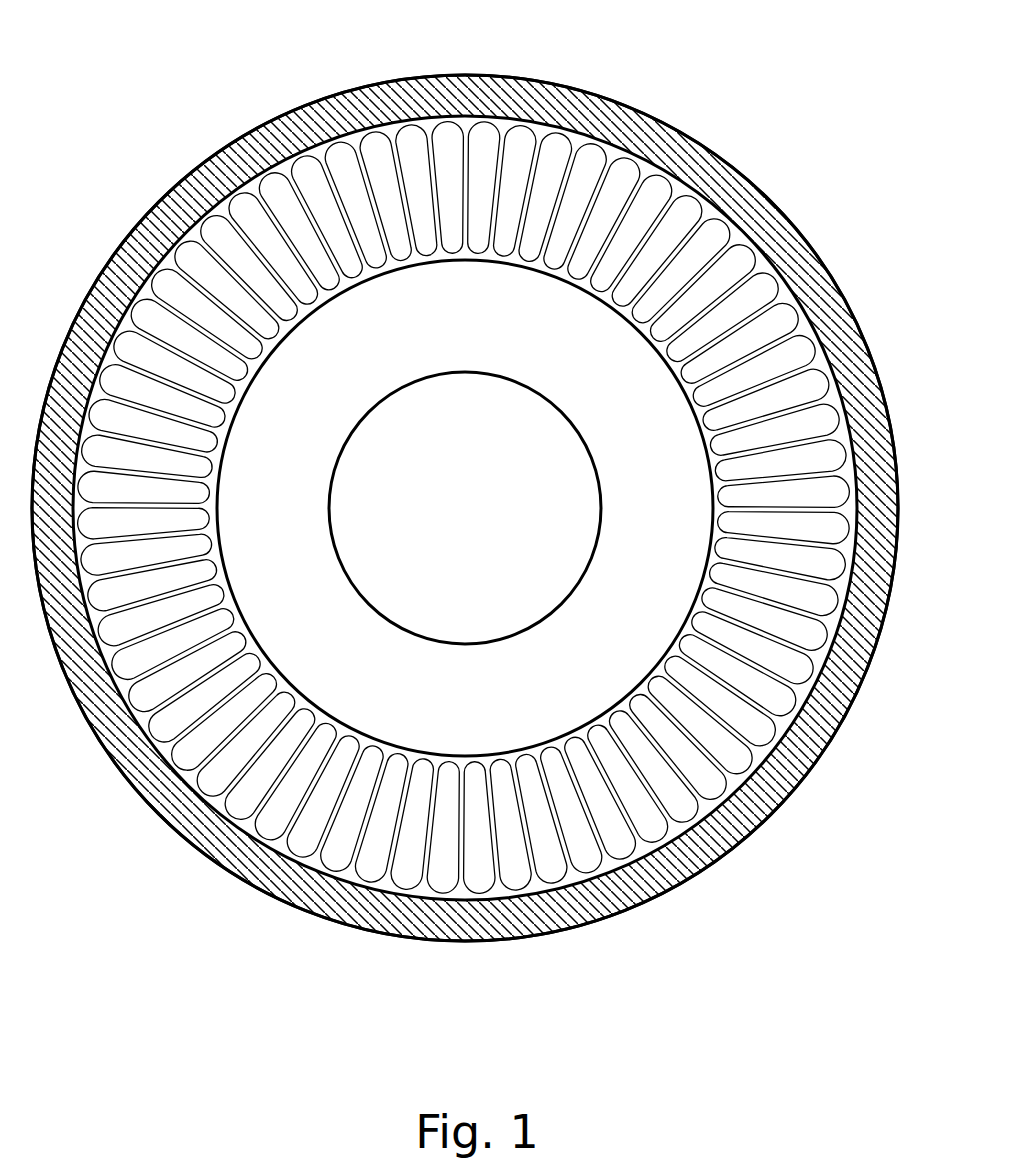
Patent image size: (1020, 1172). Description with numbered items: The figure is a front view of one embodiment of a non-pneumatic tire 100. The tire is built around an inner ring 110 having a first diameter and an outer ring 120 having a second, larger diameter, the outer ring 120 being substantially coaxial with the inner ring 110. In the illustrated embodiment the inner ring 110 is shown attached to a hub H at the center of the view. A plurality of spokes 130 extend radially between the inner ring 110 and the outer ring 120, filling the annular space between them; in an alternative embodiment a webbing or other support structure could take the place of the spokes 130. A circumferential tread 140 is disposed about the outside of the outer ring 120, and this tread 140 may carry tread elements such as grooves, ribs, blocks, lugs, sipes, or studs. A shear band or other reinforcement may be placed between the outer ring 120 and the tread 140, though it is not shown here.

The non-pneumatic tire 100 is at (797, 106).
The inner ring 110 is at (347, 273).
The outer ring 120 is at (497, 106).
The spokes 130 is at (152, 353).
The circumferential tread 140 is at (644, 102).
The hub H is at (313, 658).